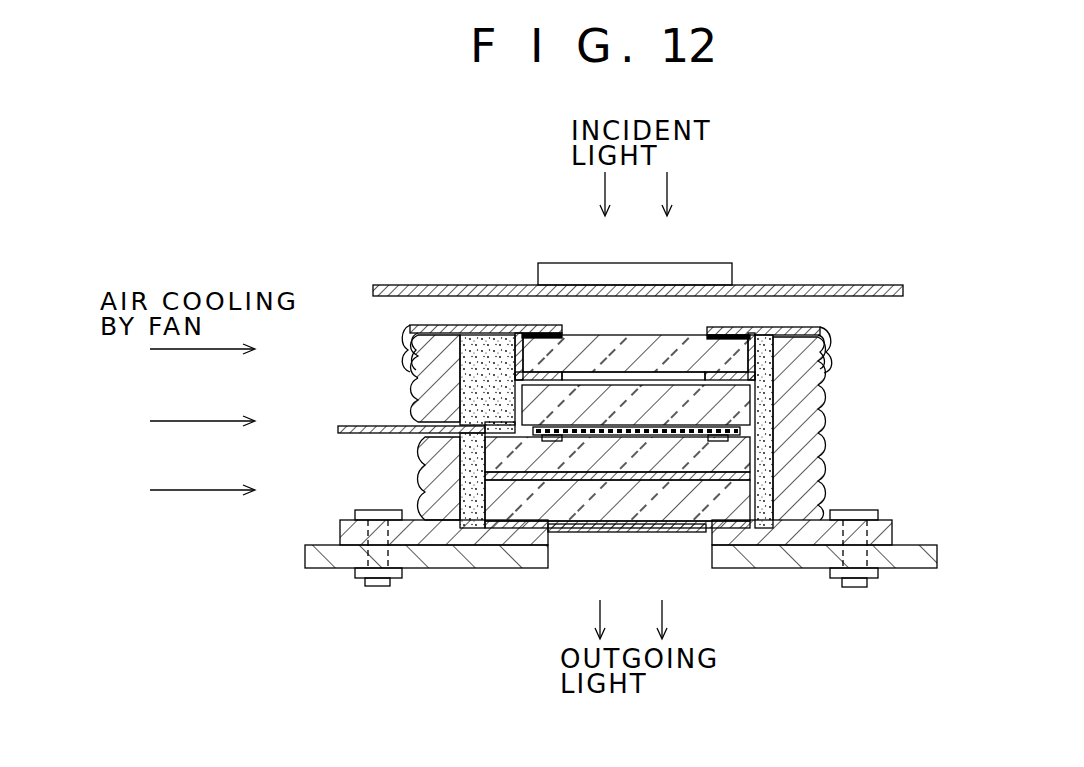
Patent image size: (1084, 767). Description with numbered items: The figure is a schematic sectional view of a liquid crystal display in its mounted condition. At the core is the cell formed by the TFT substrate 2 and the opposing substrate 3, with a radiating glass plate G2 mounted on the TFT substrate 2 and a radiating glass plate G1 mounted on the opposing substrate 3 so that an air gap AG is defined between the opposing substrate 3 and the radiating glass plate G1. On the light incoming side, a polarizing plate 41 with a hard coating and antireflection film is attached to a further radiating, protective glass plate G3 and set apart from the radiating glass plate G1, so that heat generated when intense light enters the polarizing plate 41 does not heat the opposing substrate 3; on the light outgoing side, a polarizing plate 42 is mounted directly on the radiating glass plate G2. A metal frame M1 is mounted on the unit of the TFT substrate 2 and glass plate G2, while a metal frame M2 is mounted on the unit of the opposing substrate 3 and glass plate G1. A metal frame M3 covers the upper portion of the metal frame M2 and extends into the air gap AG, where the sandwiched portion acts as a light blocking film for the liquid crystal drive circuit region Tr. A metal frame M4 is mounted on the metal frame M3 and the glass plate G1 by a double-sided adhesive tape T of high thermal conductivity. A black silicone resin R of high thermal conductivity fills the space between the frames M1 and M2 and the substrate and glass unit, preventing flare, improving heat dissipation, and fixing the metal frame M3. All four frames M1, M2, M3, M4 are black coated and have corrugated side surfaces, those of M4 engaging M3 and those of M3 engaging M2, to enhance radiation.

The opposing substrate 3 is at (628, 403).
The polarizing plate 41 is at (688, 284).
The polarizing plate 42 is at (688, 532).
The TFT substrate 2 is at (427, 480).
The metal frame M1 is at (508, 457).
The metal frame M2 is at (433, 397).
The metal frame M3 is at (515, 352).
The metal frame M4 is at (417, 325).
The black silicone resin R is at (767, 488).
The radiating glass plate G1 is at (530, 333).
The radiating glass plate G2 is at (590, 515).
The radiating (protective) glass plate G3 is at (553, 263).
The double-sided adhesive tape T is at (730, 331).
The air gap AG is at (700, 387).
The liquid crystal drive circuit region Tr is at (563, 441).